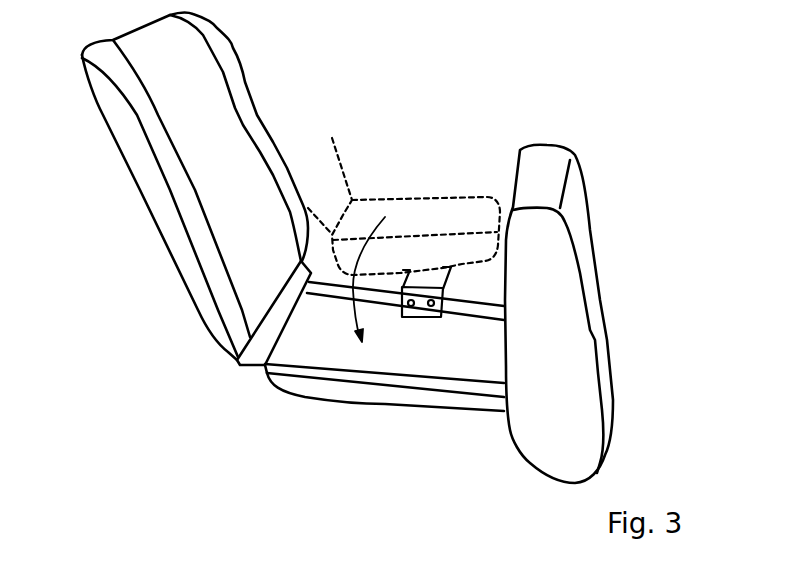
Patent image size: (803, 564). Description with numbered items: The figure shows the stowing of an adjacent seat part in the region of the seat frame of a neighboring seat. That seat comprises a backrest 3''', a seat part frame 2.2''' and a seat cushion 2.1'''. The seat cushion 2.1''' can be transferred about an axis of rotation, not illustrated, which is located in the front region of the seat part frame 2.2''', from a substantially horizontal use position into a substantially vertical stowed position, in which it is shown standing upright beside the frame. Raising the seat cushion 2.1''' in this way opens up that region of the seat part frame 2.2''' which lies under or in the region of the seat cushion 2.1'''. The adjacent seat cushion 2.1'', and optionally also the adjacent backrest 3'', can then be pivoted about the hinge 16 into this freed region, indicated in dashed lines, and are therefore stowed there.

The backrest 3''' is at (221, 180).
The backrest 3'' is at (404, 185).
The hinge 16 is at (422, 278).
The seat cushion 2.1'' is at (415, 222).
The seat cushion 2.1''' is at (559, 314).
The seat part frame 2.2''' is at (384, 373).